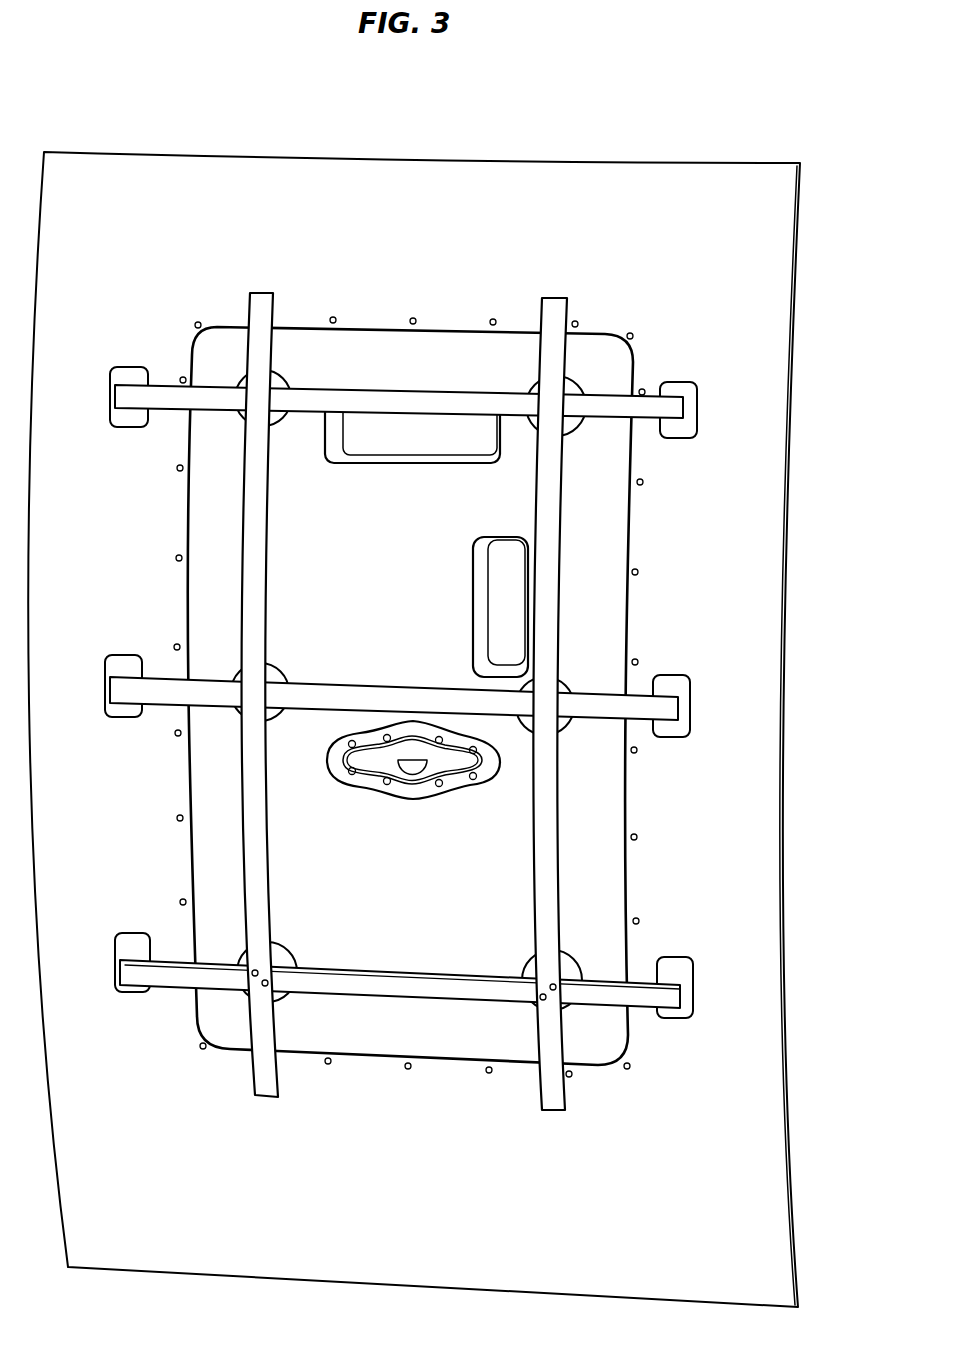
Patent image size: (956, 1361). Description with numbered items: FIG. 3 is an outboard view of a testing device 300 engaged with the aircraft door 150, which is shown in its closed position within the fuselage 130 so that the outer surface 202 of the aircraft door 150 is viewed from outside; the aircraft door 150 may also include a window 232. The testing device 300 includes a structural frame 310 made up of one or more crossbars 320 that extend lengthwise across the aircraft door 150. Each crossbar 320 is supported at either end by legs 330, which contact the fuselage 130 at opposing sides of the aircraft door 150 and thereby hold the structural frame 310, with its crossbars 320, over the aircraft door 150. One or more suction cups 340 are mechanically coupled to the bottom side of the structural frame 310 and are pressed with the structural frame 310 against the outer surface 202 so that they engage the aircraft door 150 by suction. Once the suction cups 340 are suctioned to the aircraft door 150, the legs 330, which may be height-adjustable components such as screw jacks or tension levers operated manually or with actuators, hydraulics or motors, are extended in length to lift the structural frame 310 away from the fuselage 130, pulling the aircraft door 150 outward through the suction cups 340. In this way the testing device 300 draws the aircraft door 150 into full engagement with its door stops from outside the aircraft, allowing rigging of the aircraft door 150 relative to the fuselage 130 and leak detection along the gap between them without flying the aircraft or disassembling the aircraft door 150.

The testing device 300 is at (126, 76).
The fuselage 130 is at (778, 236).
The window 232 is at (636, 196).
The outer surface 202 is at (590, 860).
The aircraft door 150 is at (606, 593).
The structural frame 310 is at (242, 529).
The crossbar 320 is at (372, 385).
The leg 330 is at (137, 368).
The suction cup 340 is at (242, 330).